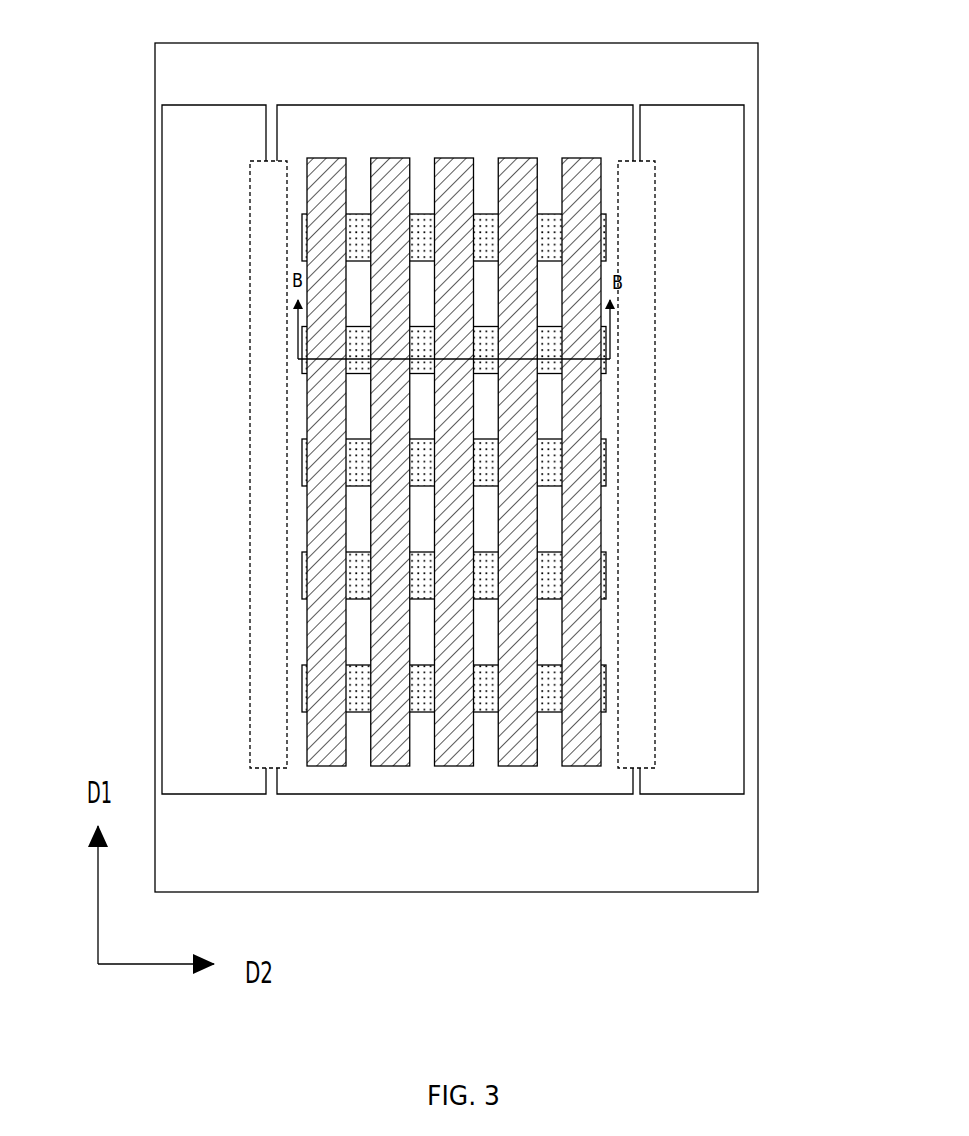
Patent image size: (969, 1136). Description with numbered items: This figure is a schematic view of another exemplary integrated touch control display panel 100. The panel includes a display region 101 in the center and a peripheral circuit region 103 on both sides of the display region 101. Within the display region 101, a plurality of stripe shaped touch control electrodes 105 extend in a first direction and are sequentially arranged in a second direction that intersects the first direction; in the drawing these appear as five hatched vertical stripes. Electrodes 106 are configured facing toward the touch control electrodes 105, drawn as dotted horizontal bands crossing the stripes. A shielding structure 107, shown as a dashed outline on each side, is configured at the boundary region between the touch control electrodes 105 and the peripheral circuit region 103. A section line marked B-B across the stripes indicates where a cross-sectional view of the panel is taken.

The integrated touch control display panel 100 is at (118, 24).
The display region 101 is at (577, 462).
The peripheral circuit region 103 is at (710, 258).
The touch control electrodes 105 is at (587, 520).
The electrodes 106 is at (602, 575).
The shielding structure 107 is at (637, 682).